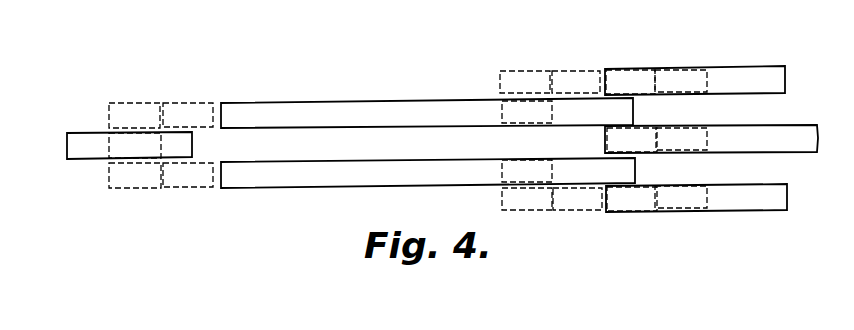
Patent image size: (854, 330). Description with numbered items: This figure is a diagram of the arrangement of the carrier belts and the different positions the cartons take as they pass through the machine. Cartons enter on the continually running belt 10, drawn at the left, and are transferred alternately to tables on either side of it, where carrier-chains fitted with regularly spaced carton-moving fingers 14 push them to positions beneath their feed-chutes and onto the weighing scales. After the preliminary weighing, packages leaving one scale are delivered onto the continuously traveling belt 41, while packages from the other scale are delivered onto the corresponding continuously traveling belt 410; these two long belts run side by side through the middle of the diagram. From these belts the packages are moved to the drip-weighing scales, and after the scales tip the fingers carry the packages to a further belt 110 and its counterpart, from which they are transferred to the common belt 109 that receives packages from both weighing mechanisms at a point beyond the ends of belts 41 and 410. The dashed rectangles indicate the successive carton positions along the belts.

The continually running belt 10 is at (83, 140).
The continuously traveling belt 410 is at (357, 92).
The continuously traveling belt 41 is at (363, 161).
The carton-moving fingers 14 is at (728, 60).
The common belt 109 is at (747, 118).
The belt 110 is at (740, 180).